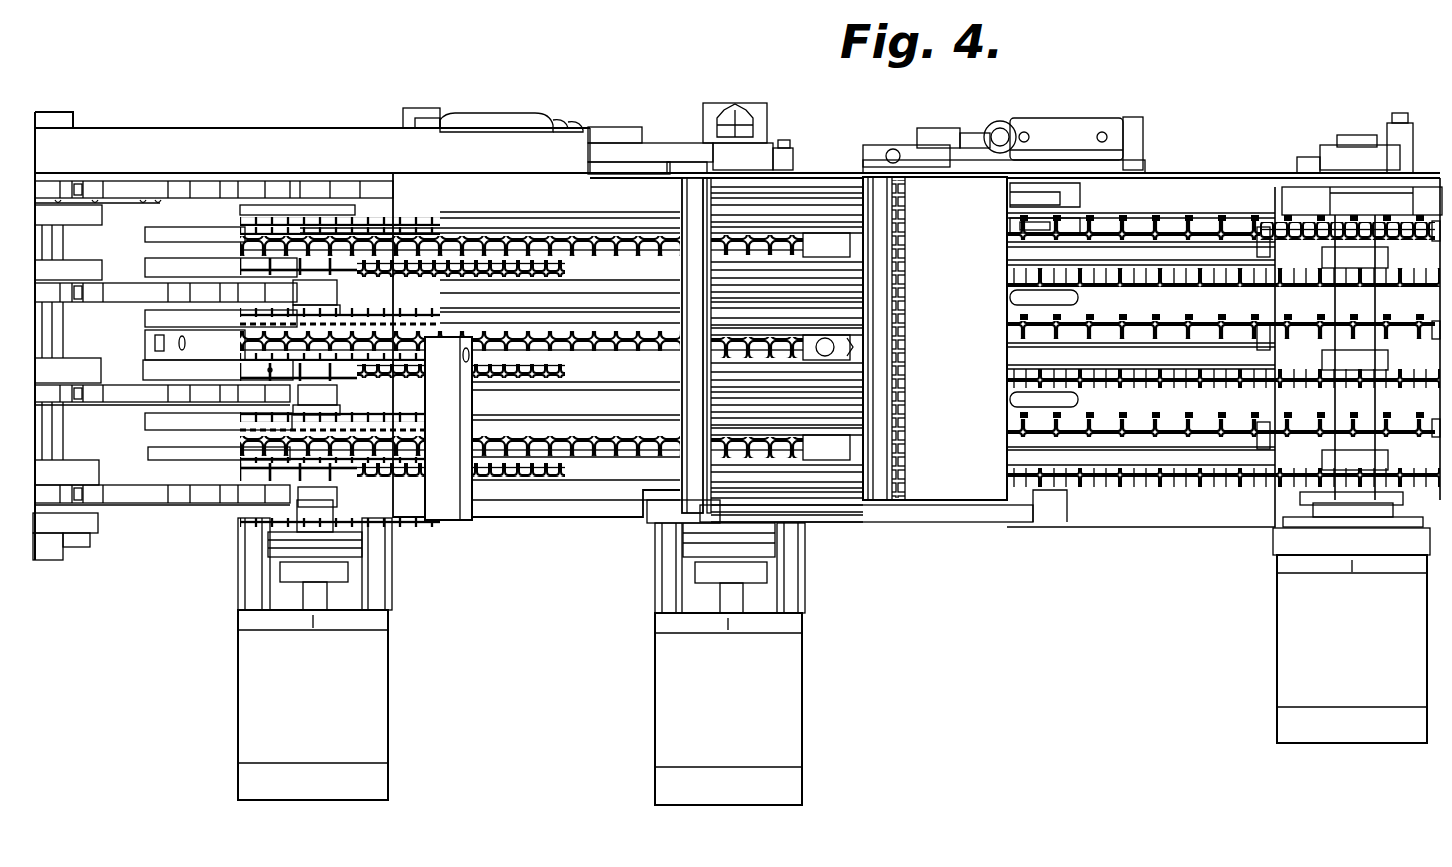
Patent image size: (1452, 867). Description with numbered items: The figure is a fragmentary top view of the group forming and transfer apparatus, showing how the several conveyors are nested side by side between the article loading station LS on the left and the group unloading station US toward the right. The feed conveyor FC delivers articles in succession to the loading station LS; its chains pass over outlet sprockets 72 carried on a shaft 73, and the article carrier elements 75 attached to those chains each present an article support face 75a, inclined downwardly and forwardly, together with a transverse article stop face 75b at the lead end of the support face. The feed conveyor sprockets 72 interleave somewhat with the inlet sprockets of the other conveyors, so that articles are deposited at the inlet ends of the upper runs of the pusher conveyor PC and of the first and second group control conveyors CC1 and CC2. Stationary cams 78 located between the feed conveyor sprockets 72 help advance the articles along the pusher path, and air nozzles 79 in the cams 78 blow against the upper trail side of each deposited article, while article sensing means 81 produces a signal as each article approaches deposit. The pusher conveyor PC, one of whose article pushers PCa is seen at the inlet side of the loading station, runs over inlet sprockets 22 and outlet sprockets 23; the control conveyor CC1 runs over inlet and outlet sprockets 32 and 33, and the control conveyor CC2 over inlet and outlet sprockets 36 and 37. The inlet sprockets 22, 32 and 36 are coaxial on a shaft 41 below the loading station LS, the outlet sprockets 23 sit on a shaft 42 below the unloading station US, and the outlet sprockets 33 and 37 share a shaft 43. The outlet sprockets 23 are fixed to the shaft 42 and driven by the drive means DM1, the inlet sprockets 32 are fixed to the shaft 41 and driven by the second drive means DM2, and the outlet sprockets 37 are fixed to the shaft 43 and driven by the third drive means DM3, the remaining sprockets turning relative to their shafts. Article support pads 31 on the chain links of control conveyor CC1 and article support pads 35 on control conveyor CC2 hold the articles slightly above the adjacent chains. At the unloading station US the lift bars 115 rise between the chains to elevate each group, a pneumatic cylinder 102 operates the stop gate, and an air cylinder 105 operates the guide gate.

The feed conveyor Fc is at (115, 170).
The article loading station LS is at (313, 158).
The outlet sprockets 72 is at (200, 180).
The inlet sprockets 36 is at (257, 207).
The air cylinder 105 is at (497, 112).
The pusher conveyor PC is at (505, 227).
The first group control conveyor CC1 is at (448, 257).
The second group control conveyor CC2 is at (602, 213).
The group unloading station US is at (798, 170).
The pneumatic cylinder 102 is at (1053, 117).
The outlet sprockets 37 is at (1420, 227).
The outlet sprockets 33 is at (1387, 220).
The article support pads 35 is at (1200, 225).
The air nozzles 79 is at (270, 320).
The stationary cams 78 is at (170, 305).
The inlet sprockets 32 is at (318, 285).
The article sensing means 81 is at (470, 345).
The inlet sprockets 22 is at (262, 350).
The outlet sprockets 23 is at (803, 343).
The lift bars 115 is at (1055, 401).
The article carrier elements 75 is at (135, 487).
The article pusher PCa is at (287, 440).
The shaft 73 is at (170, 513).
The article support face 75a is at (120, 493).
The article stop face 75b is at (163, 493).
The article support pads 31 is at (382, 470).
The shaft 41 is at (375, 527).
The shaft 42 is at (690, 522).
The shaft 43 is at (1330, 443).
The drive means DM1 is at (805, 648).
The second drive means DM2 is at (380, 660).
The third drive means DM3 is at (1277, 622).